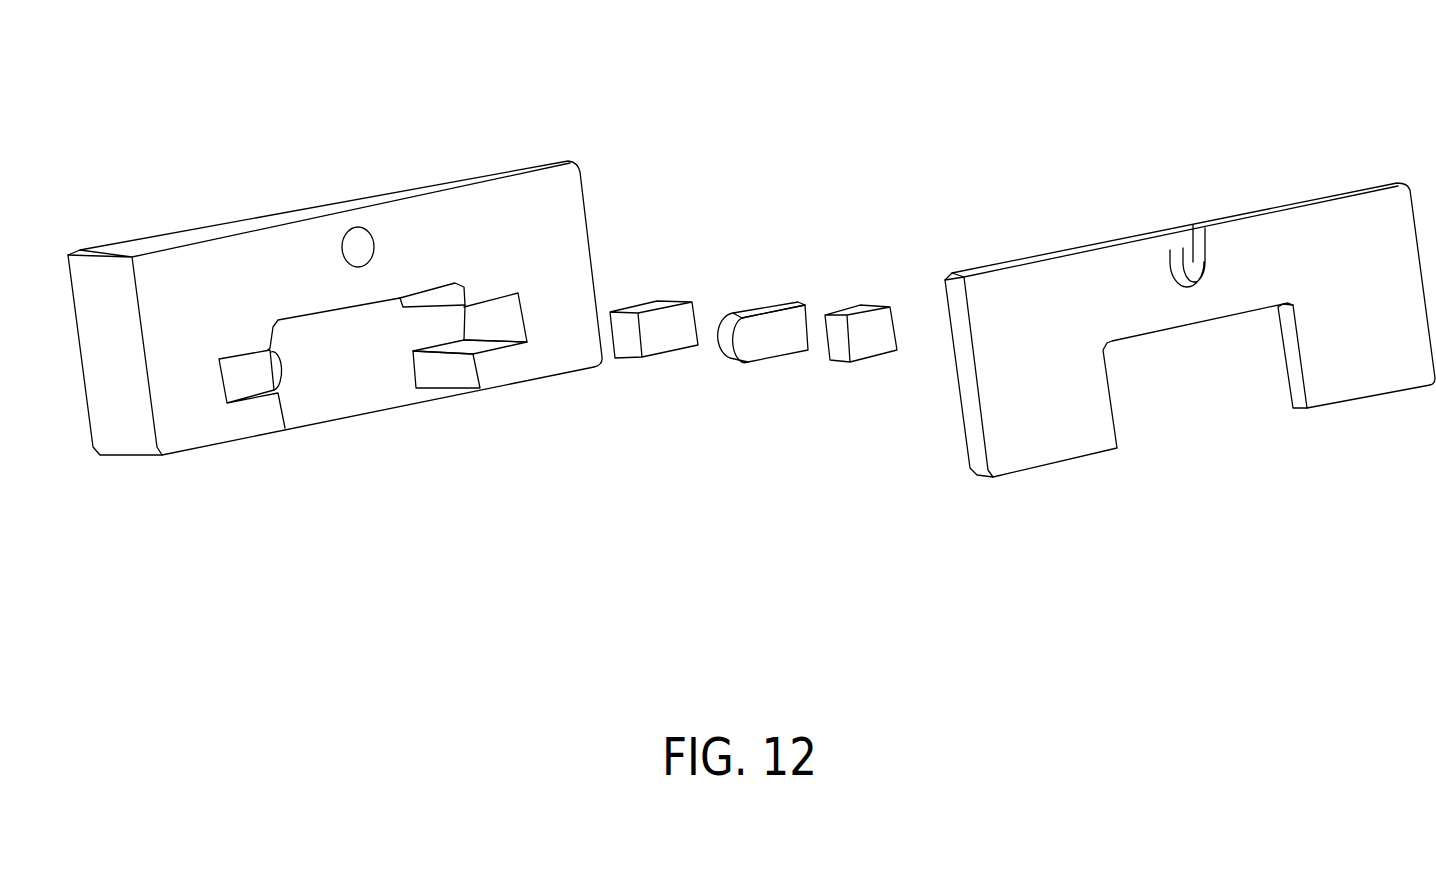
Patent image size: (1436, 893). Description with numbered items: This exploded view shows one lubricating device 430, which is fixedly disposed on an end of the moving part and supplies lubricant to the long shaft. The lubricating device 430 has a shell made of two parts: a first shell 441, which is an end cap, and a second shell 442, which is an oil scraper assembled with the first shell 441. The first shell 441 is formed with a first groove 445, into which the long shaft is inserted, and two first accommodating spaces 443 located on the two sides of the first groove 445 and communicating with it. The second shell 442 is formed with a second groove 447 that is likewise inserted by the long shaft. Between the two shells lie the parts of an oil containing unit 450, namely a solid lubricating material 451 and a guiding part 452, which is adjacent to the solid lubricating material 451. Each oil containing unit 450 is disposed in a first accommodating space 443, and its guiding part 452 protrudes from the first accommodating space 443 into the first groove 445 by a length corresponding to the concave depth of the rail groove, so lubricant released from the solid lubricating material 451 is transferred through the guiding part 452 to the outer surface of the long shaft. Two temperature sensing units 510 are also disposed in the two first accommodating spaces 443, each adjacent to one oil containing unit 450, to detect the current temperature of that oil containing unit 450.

The lubricating device 430 is at (207, 53).
The first shell 441 is at (452, 180).
The second shell 442 is at (1270, 223).
The first accommodating space 443 is at (498, 322).
The first groove 445 is at (370, 363).
The second groove 447 is at (1213, 405).
The oil containing unit 450 is at (827, 198).
The solid lubricating material 451 is at (660, 325).
The guiding part 452 is at (282, 365).
The temperature sensing unit 510 is at (240, 389).